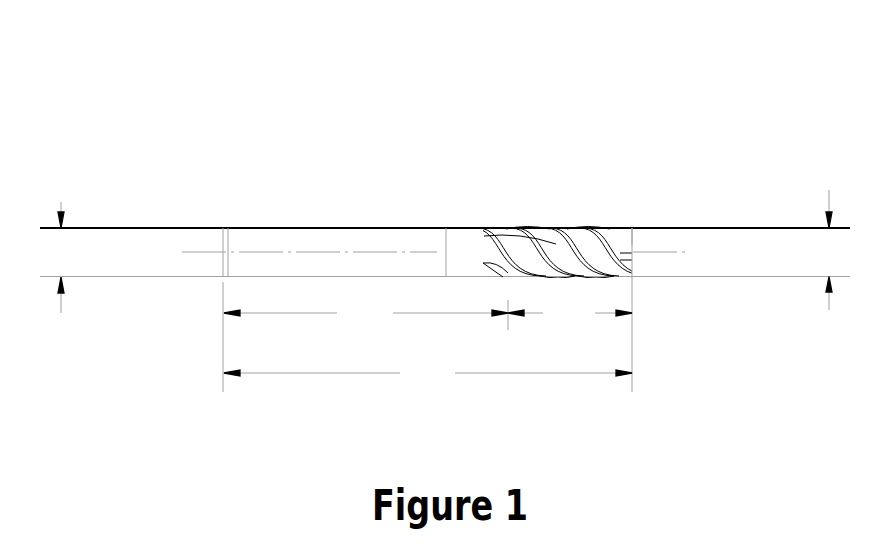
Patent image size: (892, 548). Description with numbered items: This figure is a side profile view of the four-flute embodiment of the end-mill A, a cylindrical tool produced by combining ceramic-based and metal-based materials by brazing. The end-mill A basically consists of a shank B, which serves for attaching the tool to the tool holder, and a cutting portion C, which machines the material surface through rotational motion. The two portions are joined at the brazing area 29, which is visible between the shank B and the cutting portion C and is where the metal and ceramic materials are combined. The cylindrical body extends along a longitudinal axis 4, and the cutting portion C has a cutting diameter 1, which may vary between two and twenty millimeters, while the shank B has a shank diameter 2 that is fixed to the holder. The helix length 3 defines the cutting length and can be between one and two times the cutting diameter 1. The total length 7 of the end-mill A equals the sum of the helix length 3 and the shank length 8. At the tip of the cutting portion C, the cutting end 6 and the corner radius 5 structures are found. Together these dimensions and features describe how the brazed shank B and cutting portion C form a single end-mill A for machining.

The cutting diameter 1 is at (827, 250).
The shank diameter 2 is at (61, 313).
The helix length 3 is at (570, 314).
The longitudinal axis 4 is at (276, 245).
The corner radius 5 is at (636, 208).
The cutting end 6 is at (650, 224).
The total length 7 is at (428, 374).
The shank length 8 is at (365, 337).
The brazing area 29 is at (447, 243).
The end-mill A is at (395, 65).
The shank B is at (358, 148).
The cutting portion C is at (532, 152).